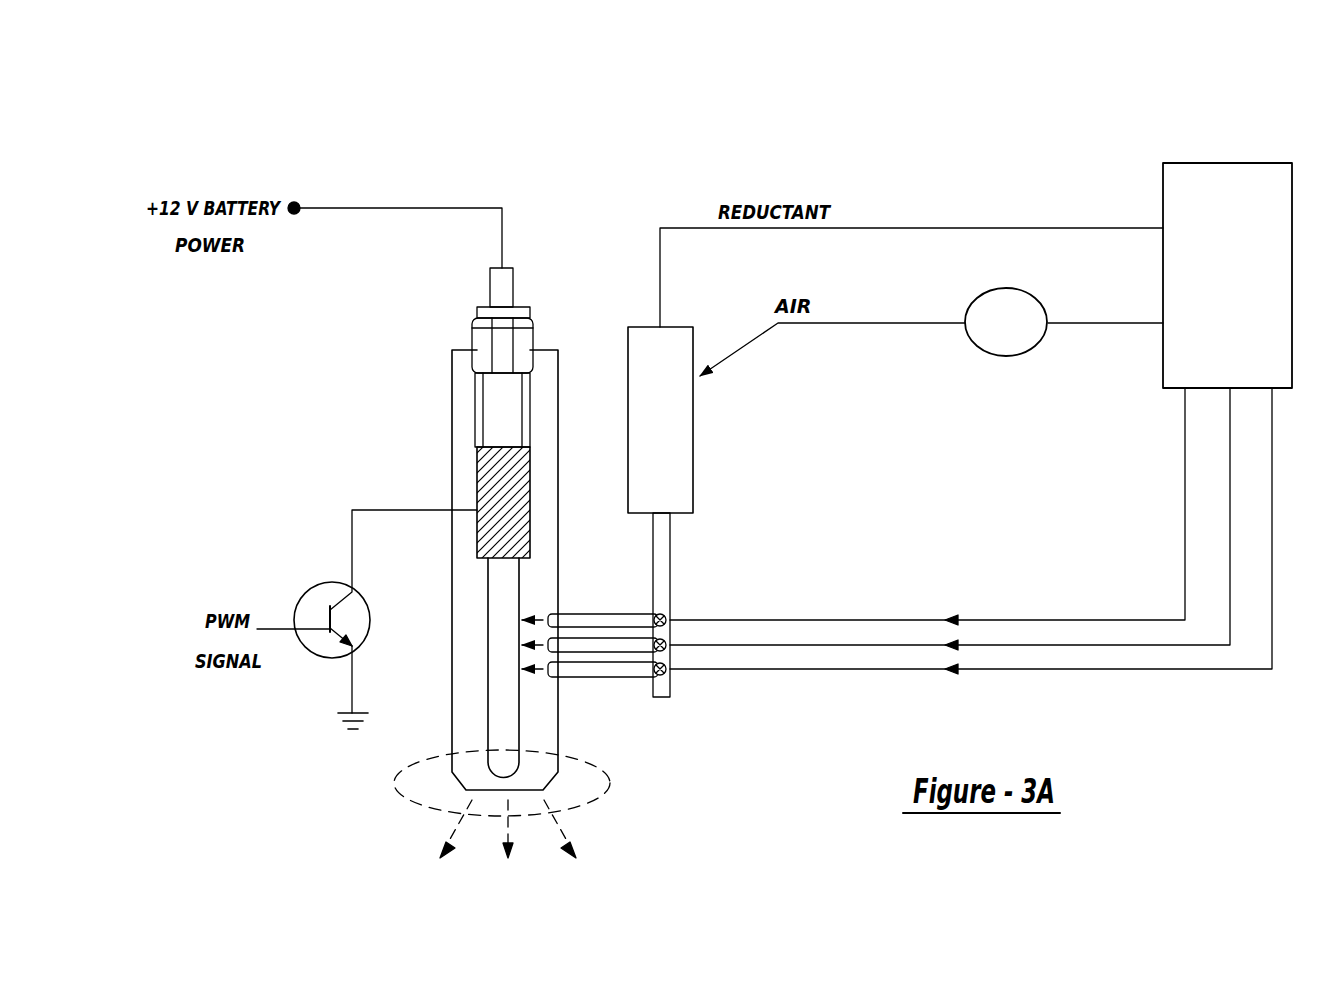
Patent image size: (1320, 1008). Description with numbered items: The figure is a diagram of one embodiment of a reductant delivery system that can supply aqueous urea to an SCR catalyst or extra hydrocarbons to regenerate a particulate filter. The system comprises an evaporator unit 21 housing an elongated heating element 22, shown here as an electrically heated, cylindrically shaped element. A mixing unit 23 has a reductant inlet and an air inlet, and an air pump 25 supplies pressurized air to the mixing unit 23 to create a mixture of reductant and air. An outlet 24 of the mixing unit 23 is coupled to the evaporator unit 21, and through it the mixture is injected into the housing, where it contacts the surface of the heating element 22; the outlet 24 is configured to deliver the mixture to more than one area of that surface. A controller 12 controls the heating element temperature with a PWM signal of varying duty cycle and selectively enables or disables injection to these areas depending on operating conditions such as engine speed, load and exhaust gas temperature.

The controller 12 is at (1175, 163).
The evaporator unit 21 is at (572, 370).
The heating element 22 is at (513, 590).
The mixing unit 23 is at (693, 472).
The outlet 24 is at (668, 565).
The air pump 25 is at (1010, 288).